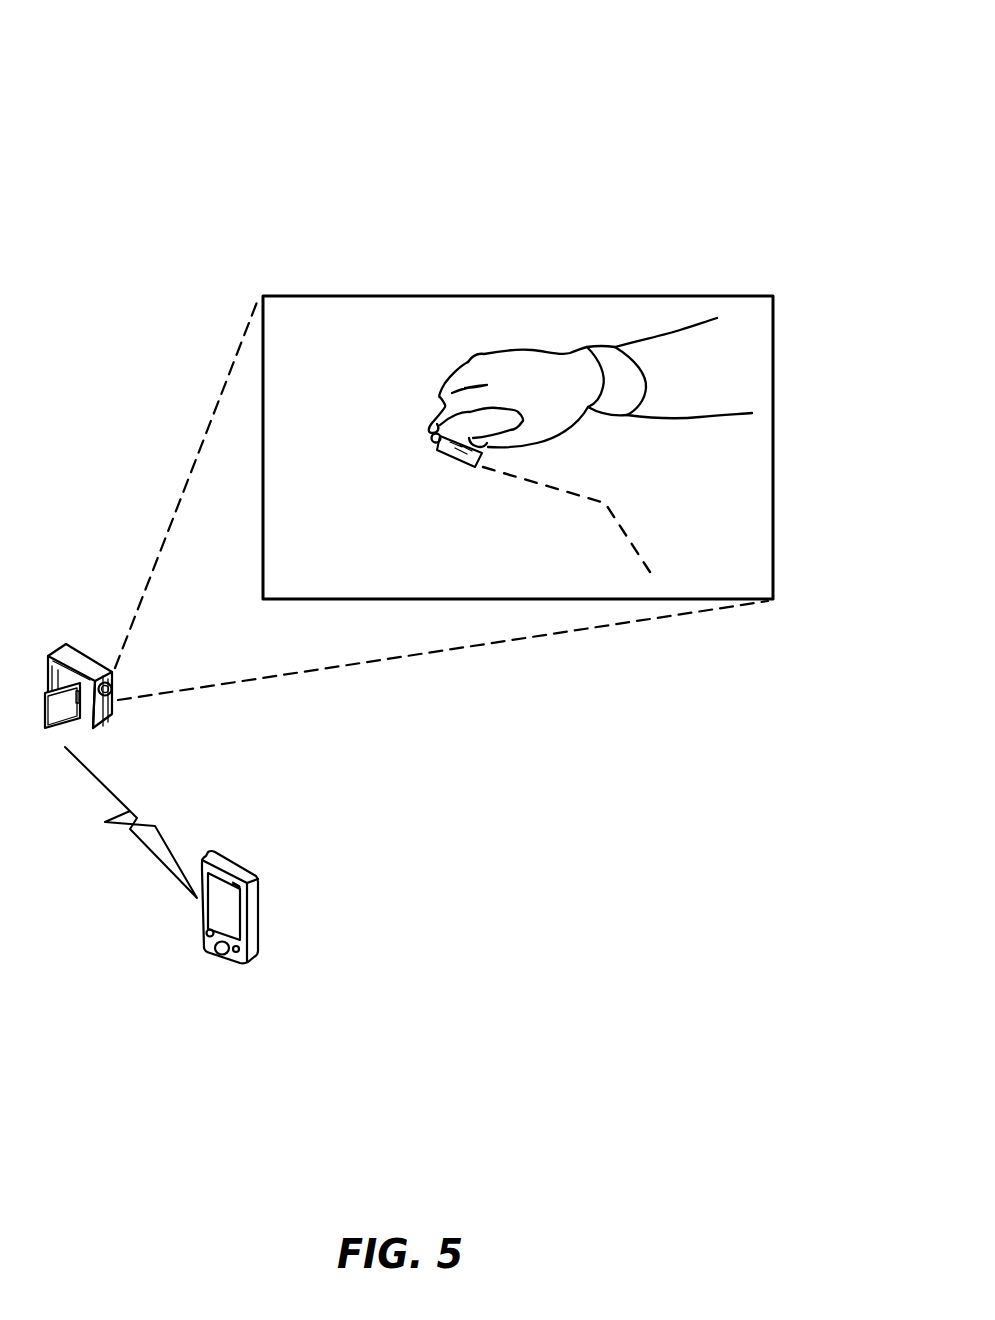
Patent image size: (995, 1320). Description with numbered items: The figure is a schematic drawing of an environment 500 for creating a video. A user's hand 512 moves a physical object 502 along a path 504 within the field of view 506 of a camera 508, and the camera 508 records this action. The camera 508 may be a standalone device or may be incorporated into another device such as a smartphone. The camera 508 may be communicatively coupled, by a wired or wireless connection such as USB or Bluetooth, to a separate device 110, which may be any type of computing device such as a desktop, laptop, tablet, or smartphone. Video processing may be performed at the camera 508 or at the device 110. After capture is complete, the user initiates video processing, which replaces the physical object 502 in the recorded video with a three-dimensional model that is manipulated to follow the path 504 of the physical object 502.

The environment 500 is at (582, 42).
The field of view 506 is at (705, 296).
The hand 512 is at (532, 348).
The physical object 502 is at (445, 457).
The path 504 is at (620, 508).
The camera 508 is at (86, 730).
The device 110 is at (258, 928).